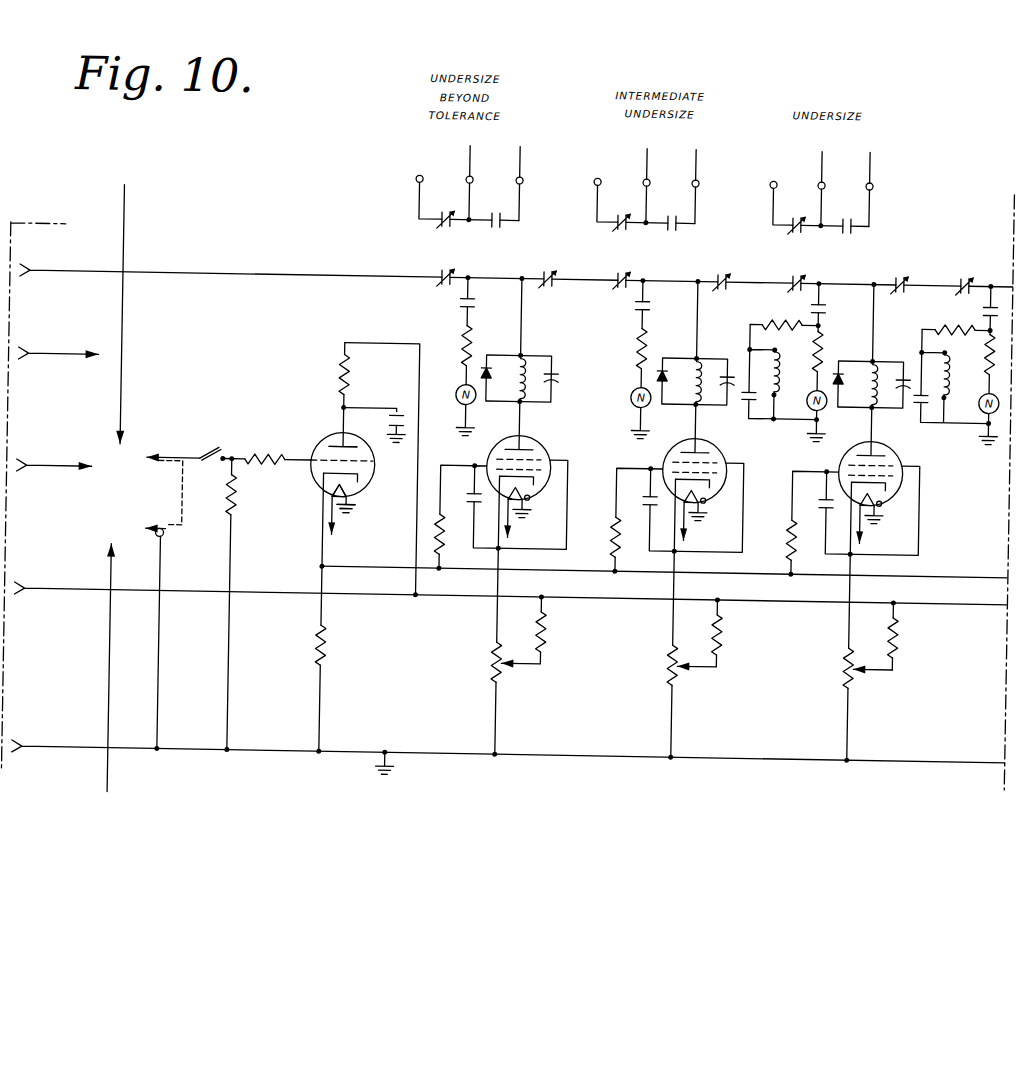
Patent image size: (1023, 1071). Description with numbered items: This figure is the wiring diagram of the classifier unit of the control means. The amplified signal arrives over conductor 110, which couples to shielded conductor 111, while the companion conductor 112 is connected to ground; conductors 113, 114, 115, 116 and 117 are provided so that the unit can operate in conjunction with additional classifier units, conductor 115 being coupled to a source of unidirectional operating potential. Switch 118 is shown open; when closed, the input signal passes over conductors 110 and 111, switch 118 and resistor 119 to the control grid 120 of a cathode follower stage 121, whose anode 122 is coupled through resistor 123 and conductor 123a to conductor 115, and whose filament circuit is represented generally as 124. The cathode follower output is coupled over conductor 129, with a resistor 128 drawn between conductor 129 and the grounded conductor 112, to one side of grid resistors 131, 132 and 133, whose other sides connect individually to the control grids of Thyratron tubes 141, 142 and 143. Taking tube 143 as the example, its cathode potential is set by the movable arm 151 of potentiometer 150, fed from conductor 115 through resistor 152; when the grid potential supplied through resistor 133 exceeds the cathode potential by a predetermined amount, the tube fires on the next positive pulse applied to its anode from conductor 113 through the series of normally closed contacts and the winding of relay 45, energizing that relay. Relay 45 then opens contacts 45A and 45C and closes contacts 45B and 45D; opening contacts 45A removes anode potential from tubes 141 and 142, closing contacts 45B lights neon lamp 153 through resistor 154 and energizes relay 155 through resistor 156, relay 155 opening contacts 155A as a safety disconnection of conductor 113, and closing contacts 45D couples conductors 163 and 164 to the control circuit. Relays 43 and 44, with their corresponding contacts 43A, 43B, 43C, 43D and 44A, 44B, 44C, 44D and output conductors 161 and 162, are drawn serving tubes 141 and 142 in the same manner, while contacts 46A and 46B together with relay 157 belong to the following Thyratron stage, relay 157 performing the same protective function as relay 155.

The conductor 110 is at (70, 461).
The shielded conductor 111 is at (174, 452).
The conductor 112 is at (62, 740).
The conductor 113 is at (76, 259).
The conductor 114 is at (60, 349).
The conductor 115 is at (70, 583).
The conductor 116 is at (126, 208).
The conductor 117 is at (118, 771).
The switch 118 is at (214, 443).
The resistor 119 is at (259, 448).
The control grid 120 is at (327, 452).
The cathode follower stage 121 is at (371, 488).
The anode 122 is at (352, 440).
The resistor 123 is at (338, 369).
The conductor 123a is at (362, 337).
The filament circuit 124 is at (355, 507).
The resistor 128 is at (334, 650).
The conductor 129 is at (393, 563).
The grid resistor 131 is at (446, 540).
The grid resistor 132 is at (618, 538).
The grid resistor 133 is at (794, 538).
The Thyratron tube 141 is at (546, 437).
The Thyratron tube 142 is at (726, 445).
The Thyratron tube 143 is at (905, 445).
The potentiometer 150 is at (847, 654).
The movable arm 151 is at (882, 657).
The resistor 152 is at (905, 628).
The neon lamp 153 is at (826, 396).
The resistor 154 is at (823, 335).
The relay 155 is at (773, 390).
The contacts 155A is at (550, 262).
The resistor 156 is at (786, 308).
The relay 157 is at (948, 384).
The terminal 161 is at (466, 149).
The terminal 162 is at (520, 149).
The conductor 163 is at (643, 149).
The conductor 164 is at (696, 149).
The relay 43 is at (540, 352).
The variable capacitor 43A is at (444, 262).
The capacitor 43B is at (461, 288).
The variable capacitor 43C is at (444, 227).
The capacitor 43D is at (492, 217).
The relay 44 is at (710, 354).
The variable capacitor 44A is at (626, 262).
The capacitor 44B is at (637, 294).
The variable capacitor 44C is at (619, 231).
The capacitor 44D is at (666, 218).
The relay 45 is at (886, 355).
The contacts 45A is at (796, 262).
The contacts 45B is at (826, 300).
The contacts 45C is at (795, 234).
The contacts 45D is at (850, 220).
The variable capacitor 46A is at (966, 262).
The capacitor 46B is at (982, 299).